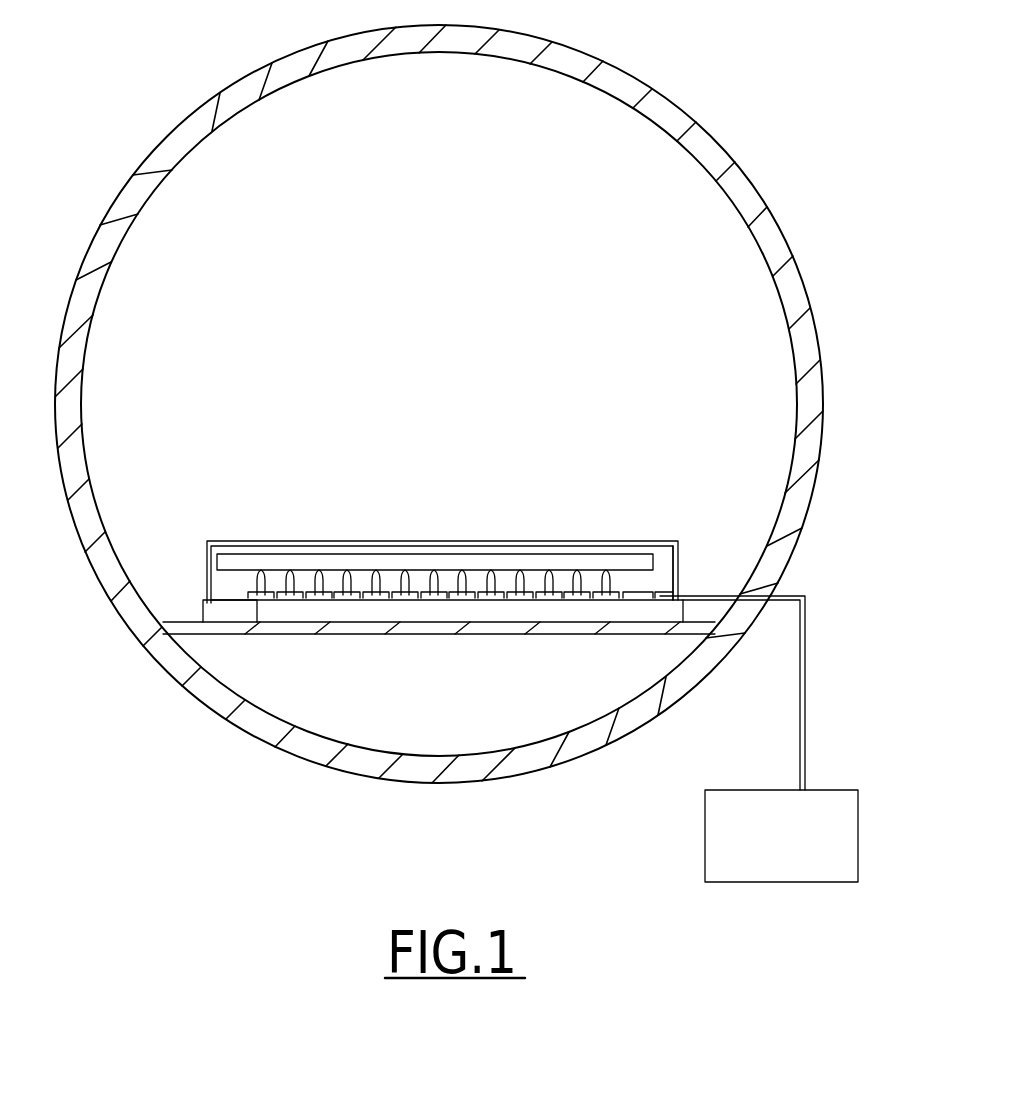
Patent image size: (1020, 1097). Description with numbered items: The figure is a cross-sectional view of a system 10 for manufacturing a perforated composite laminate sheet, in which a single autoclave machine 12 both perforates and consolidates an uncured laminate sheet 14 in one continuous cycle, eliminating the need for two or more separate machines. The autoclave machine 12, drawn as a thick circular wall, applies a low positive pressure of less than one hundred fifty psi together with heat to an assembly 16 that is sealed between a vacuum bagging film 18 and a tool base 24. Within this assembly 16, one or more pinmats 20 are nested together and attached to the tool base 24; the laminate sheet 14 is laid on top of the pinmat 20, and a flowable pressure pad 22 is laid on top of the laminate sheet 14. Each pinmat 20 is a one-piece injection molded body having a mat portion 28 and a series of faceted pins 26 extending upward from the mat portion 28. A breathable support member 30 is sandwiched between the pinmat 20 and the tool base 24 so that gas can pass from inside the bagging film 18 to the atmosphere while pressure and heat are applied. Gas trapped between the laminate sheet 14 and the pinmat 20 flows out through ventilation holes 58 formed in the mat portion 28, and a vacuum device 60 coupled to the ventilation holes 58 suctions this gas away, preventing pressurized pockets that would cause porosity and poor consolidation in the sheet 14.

The system 10 is at (792, 103).
The autoclave machine 12 is at (808, 262).
The laminate sheet 14 is at (207, 575).
The assembly 16 is at (662, 572).
The vacuum bagging film 18 is at (452, 540).
The pinmat 20 is at (657, 594).
The flowable pressure pad 22 is at (290, 552).
The tool base 24 is at (372, 627).
The pins 26 is at (405, 578).
The mat portion 28 is at (212, 591).
The breathable support member 30 is at (257, 604).
The ventilation holes 58 is at (580, 598).
The vacuum device 60 is at (757, 882).